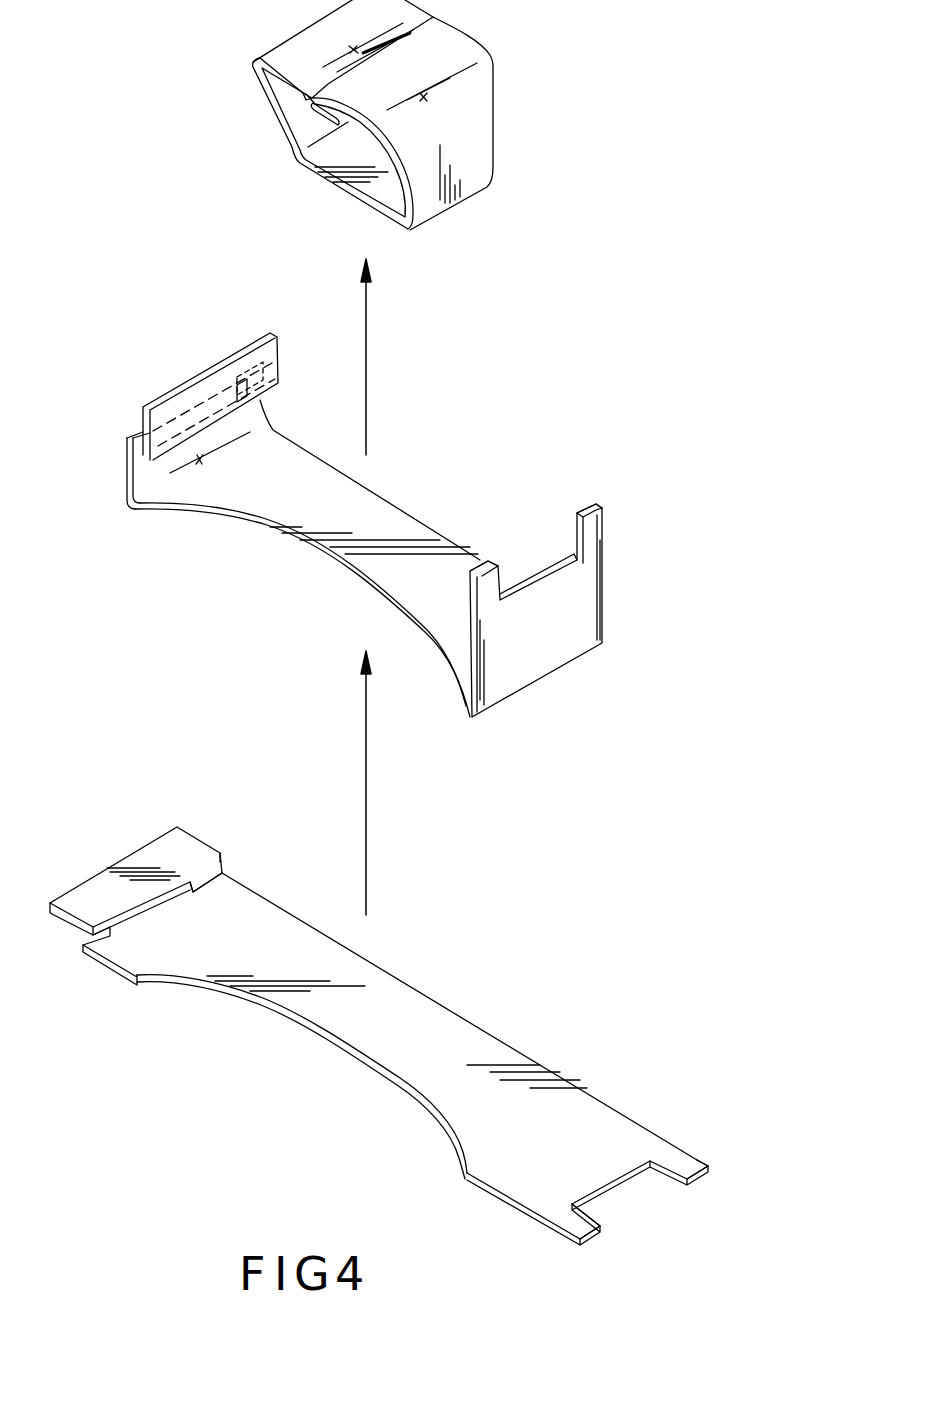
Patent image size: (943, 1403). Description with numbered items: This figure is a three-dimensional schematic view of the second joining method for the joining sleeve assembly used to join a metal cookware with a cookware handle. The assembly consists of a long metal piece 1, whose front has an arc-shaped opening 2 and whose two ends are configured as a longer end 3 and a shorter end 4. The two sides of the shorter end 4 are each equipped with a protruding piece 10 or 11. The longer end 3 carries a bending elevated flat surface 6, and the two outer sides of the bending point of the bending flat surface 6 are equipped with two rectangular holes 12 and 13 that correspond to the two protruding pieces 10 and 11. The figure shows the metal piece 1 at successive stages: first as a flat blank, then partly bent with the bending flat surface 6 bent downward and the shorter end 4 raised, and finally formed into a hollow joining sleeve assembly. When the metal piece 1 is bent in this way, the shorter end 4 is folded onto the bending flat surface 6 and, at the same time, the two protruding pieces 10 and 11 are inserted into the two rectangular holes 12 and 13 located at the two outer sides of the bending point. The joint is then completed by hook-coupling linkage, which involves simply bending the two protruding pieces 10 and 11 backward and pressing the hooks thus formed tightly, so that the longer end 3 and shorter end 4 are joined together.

The long metal piece 1 is at (485, 108).
The arc-shaped opening 2 is at (318, 592).
The longer end 3 is at (278, 76).
The shorter end 4 is at (455, 42).
The bending elevated flat surface 6 is at (335, 112).
The protruding piece 10 is at (312, 113).
The protruding piece 11 is at (600, 519).
The rectangular hole 12 is at (125, 450).
The rectangular hole 13 is at (222, 869).